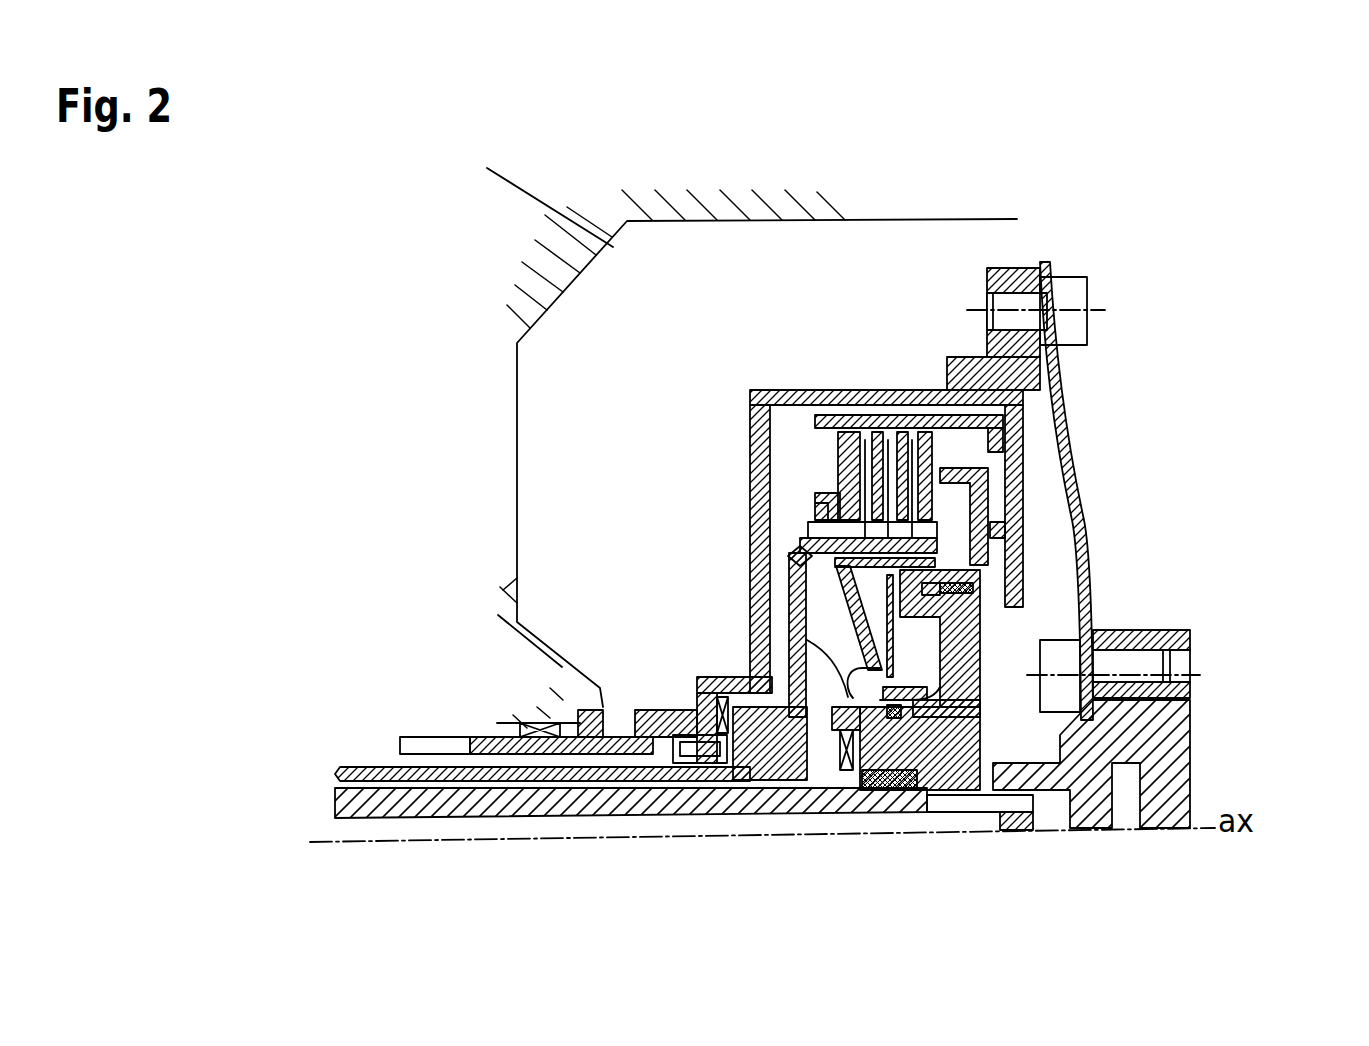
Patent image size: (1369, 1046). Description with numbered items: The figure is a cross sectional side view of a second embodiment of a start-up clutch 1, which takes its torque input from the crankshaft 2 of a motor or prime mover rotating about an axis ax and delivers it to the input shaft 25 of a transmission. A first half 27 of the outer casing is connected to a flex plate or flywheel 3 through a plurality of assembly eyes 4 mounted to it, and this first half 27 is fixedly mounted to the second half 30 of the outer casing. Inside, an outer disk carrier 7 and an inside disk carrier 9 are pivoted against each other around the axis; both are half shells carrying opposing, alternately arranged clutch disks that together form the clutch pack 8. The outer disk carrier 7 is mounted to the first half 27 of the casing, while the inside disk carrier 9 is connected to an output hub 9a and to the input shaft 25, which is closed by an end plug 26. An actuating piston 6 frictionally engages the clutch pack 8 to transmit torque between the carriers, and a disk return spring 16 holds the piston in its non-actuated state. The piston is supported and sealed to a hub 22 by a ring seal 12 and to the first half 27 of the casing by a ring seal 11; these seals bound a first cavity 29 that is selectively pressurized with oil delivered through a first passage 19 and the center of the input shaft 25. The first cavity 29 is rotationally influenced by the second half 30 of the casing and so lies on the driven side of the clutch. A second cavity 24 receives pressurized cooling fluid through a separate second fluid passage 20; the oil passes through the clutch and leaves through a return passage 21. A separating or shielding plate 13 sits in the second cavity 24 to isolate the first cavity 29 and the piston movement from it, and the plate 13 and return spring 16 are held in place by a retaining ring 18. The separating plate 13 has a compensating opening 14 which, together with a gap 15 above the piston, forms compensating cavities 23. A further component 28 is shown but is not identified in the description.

The start-up clutch 1 is at (747, 340).
The crankshaft 2 is at (1147, 743).
The flex plate or flywheel 3 is at (1053, 418).
The assembly eyes 4 is at (947, 360).
The actuating piston 6 is at (1023, 483).
The outer disk carrier 7 is at (884, 428).
The clutch pack 8 is at (838, 457).
The inside disk carrier 9 is at (820, 588).
The output hub 9a is at (805, 760).
The ring seal 11 is at (960, 566).
The ring seal 12 is at (950, 760).
The separating or shielding plate 13 is at (807, 577).
The compensating opening 14 is at (827, 621).
The gap 15 is at (1120, 538).
The disk return spring 16 is at (790, 553).
The retaining ring 18 is at (793, 653).
The first passage 19 is at (1130, 672).
The second fluid passage 20 is at (700, 760).
The return passage 21 is at (740, 760).
The hub 22 is at (888, 720).
The compensating cavities 23 is at (950, 600).
The second cavity 24 is at (827, 615).
The input shaft 25 is at (548, 800).
The end plug 26 is at (1002, 800).
The first half of outer casing 27 is at (880, 415).
The nut 28 is at (418, 745).
The first cavity 29 is at (930, 568).
The second half of outer casing 30 is at (750, 470).